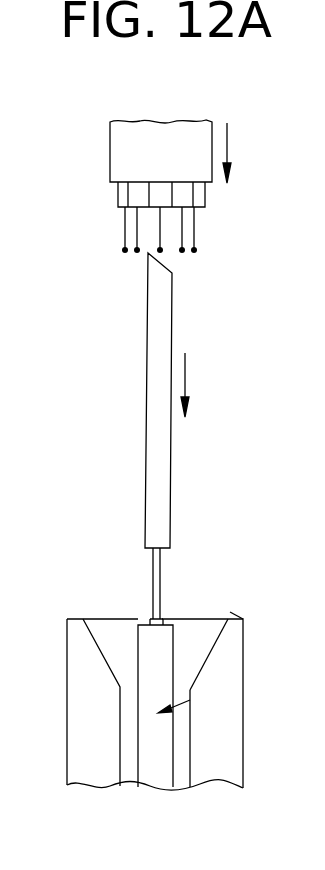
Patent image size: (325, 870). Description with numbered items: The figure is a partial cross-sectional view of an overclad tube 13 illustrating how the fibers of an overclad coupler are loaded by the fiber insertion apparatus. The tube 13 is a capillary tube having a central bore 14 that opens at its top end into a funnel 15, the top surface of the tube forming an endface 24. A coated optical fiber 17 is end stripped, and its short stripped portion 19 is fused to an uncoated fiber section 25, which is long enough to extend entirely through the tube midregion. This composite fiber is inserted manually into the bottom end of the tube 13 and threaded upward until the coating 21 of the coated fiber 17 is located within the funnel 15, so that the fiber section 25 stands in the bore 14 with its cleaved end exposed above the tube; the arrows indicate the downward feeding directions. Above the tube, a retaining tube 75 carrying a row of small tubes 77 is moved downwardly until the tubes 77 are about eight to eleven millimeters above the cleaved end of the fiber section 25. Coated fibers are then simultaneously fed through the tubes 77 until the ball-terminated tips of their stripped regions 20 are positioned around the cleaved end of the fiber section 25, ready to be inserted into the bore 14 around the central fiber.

The retaining tube 75 is at (132, 133).
The tubes 77 is at (122, 201).
The stripped fiber portions 20 is at (126, 235).
The fiber section 25 is at (157, 475).
The stripped portion 19 is at (158, 584).
The coating 21 is at (148, 642).
The overclad tube 13 is at (232, 667).
The funnel 15 is at (215, 640).
The endface 24 is at (234, 620).
The coated optical fiber 17 is at (190, 700).
The bore 14 is at (190, 729).